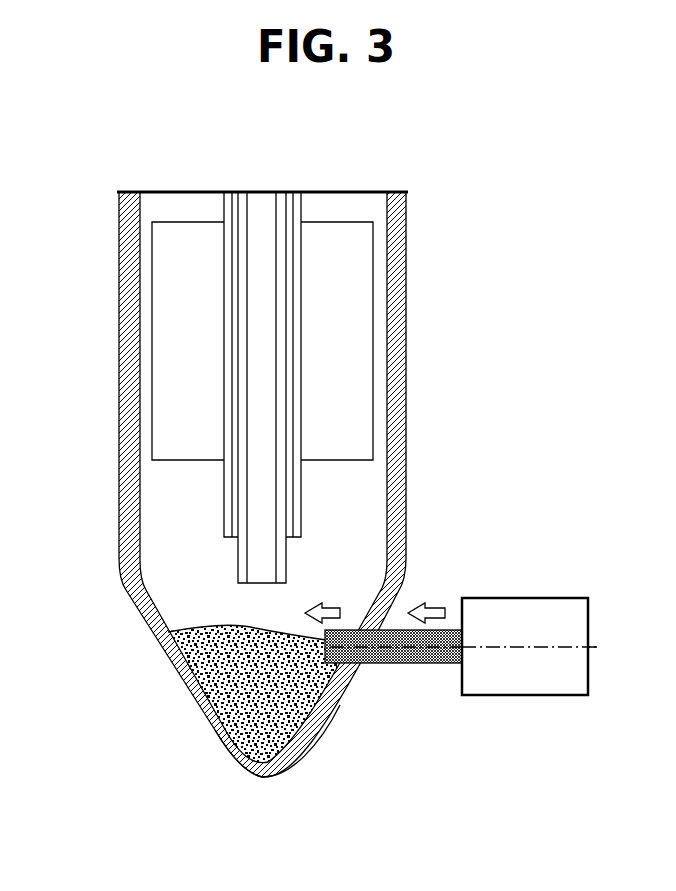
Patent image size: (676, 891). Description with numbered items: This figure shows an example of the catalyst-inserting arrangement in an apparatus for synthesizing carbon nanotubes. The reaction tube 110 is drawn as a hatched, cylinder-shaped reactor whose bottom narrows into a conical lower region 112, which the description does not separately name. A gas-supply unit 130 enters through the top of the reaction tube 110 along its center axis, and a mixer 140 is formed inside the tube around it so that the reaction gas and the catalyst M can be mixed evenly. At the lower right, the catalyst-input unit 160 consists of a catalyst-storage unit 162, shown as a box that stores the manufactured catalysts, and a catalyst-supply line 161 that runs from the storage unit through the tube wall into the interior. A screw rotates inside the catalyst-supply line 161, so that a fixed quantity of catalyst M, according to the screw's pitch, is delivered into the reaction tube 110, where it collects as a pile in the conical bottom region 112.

The reaction tube 110 is at (402, 427).
The hopper bottom of vessel 112 is at (222, 745).
The gas-supply unit 130 is at (261, 200).
The mixer 140 is at (355, 290).
The catalyst-input unit 160 is at (461, 733).
The catalyst-supply line 161 is at (452, 665).
The catalyst-storage unit 162 is at (500, 697).
The catalyst M is at (178, 672).